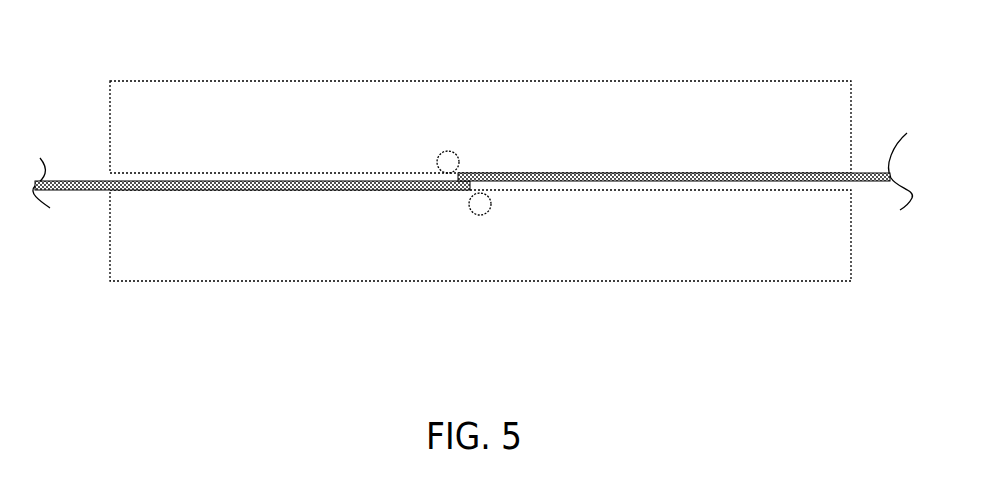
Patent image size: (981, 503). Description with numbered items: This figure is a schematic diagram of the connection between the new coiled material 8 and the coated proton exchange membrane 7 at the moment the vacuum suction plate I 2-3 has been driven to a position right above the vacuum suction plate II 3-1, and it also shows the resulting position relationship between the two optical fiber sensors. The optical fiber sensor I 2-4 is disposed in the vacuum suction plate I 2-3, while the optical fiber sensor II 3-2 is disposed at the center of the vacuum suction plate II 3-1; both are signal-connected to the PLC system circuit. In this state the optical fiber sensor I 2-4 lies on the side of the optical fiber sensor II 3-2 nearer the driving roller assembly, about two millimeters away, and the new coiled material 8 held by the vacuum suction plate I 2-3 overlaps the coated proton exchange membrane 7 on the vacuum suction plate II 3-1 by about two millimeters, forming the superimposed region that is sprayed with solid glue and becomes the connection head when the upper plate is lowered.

The vacuum suction plate I 2-3 is at (607, 108).
The optical fiber sensor I 2-4 is at (448, 162).
The new coiled material 8 is at (607, 173).
The coated proton exchange membrane 7 is at (378, 188).
The optical fiber sensor II 3-2 is at (480, 204).
The vacuum suction plate II 3-1 is at (627, 238).